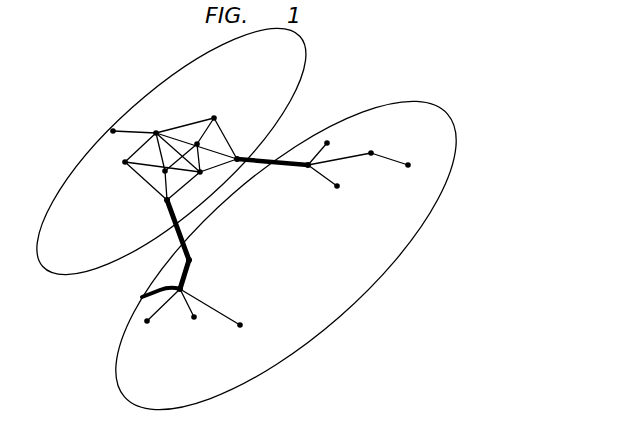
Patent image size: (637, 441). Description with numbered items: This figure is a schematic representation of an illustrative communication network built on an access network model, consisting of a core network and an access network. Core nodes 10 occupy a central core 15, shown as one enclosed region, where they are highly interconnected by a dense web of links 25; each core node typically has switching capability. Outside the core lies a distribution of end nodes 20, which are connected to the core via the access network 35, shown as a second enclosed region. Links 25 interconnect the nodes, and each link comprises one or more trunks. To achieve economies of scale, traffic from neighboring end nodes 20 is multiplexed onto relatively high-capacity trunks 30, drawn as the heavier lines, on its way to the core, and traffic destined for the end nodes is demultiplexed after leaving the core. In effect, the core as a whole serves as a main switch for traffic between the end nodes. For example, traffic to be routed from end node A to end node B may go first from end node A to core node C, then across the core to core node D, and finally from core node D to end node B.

The core node 10 is at (214, 118).
The central core 15 is at (307, 58).
The end node 20 is at (408, 165).
The link 25 is at (350, 160).
The high-capacity trunk 30 is at (285, 165).
The access network 35 is at (457, 142).
The end node A is at (147, 321).
The end node B is at (327, 143).
The core node C is at (167, 200).
The core node D is at (237, 159).